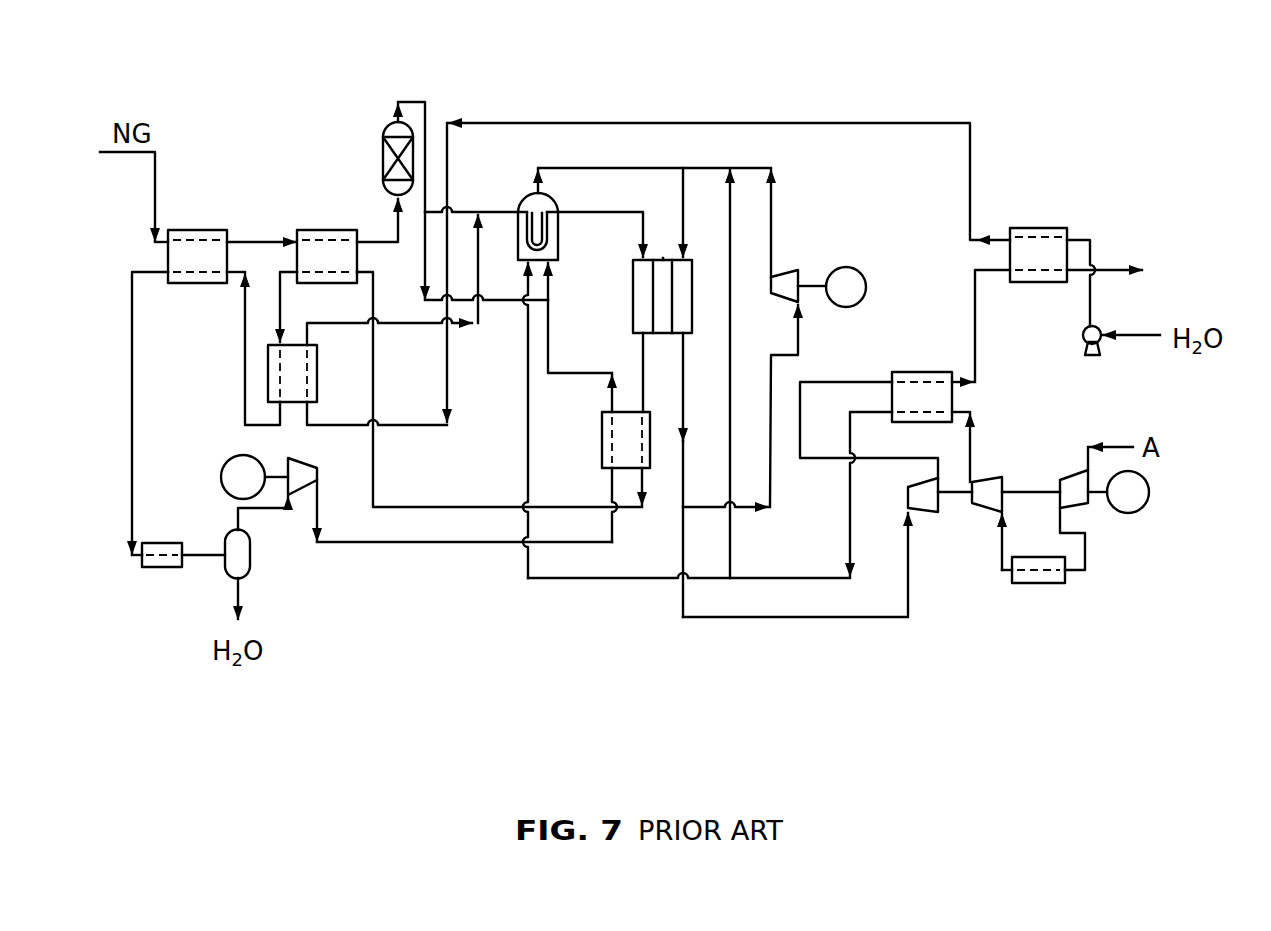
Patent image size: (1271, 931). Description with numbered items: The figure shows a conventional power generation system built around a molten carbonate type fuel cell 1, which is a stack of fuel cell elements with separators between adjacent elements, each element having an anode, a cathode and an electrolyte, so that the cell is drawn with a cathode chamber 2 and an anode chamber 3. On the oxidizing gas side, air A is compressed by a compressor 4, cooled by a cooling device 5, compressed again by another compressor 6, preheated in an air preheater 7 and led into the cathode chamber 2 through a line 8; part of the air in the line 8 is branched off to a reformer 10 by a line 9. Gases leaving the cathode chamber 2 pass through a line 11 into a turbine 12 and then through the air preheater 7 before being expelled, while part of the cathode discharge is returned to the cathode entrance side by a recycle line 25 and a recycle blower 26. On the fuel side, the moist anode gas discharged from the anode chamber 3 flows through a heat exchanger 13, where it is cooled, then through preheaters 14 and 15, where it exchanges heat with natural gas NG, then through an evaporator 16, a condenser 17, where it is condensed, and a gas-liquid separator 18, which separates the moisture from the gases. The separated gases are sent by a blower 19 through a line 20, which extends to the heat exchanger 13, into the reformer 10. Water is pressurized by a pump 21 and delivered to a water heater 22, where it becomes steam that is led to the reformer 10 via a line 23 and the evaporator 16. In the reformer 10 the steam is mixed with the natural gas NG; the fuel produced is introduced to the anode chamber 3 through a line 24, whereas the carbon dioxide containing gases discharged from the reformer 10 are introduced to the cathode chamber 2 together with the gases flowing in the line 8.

The fuel cell 1 is at (663, 257).
The cathode chamber 2 is at (692, 303).
The anode chamber 3 is at (633, 280).
The compressor 4 is at (1080, 507).
The cooling device 5 is at (1038, 583).
The compressor 6 is at (993, 478).
The air preheater 7 is at (915, 370).
The line 8 is at (733, 440).
The line 9 is at (598, 580).
The reformer 10 is at (520, 197).
The line 11 is at (810, 617).
The turbine 12 is at (925, 508).
The heat exchanger 13 is at (602, 440).
The preheater 14 is at (328, 230).
The preheater 15 is at (200, 230).
The evaporator 16 is at (318, 390).
The condenser 17 is at (163, 567).
The gas-liquid separator 18 is at (250, 555).
The blower 19 is at (282, 461).
The line 20 is at (415, 543).
The pump 21 is at (1082, 335).
The water heater 22 is at (1067, 228).
The line 23 is at (680, 122).
The line 24 is at (578, 212).
The recycle line 25 is at (773, 202).
The recycle blower 26 is at (798, 268).